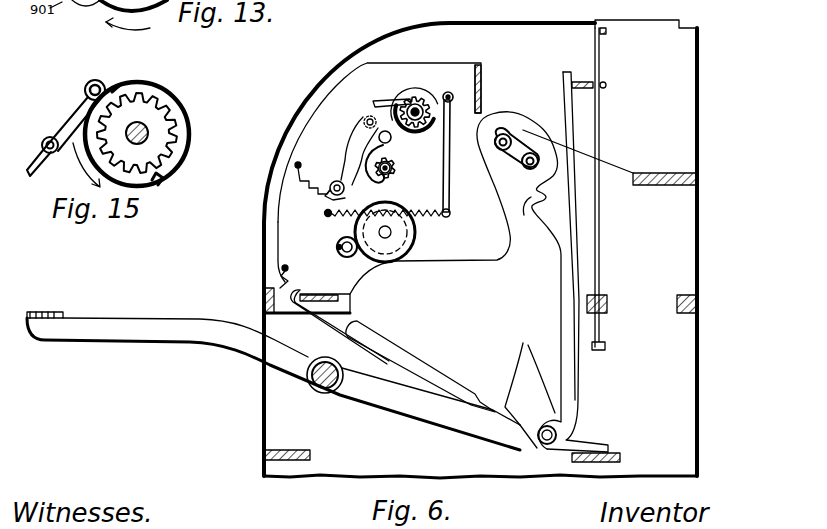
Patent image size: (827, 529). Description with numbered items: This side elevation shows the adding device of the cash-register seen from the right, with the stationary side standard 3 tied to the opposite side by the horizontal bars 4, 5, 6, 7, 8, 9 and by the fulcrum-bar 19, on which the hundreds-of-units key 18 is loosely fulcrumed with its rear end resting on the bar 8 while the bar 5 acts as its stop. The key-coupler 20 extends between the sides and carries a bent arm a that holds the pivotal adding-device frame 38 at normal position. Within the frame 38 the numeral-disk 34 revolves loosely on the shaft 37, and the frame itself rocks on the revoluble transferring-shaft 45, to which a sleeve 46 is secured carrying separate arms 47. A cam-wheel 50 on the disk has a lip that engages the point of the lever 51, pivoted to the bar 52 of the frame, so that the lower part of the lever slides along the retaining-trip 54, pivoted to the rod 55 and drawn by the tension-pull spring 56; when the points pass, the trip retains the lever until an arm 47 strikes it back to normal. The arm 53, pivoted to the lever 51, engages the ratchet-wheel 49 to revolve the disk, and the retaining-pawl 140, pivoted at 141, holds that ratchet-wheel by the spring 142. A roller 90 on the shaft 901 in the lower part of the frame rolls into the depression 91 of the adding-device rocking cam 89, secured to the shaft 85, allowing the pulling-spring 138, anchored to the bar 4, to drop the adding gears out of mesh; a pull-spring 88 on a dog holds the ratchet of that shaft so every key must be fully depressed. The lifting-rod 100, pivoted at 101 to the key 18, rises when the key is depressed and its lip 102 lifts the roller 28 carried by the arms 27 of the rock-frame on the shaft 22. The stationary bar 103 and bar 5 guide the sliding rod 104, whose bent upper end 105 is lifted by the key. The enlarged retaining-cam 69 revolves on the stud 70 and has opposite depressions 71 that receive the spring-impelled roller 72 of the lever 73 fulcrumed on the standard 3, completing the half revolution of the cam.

In FIG. 6, the side standard 3 is at (305, 102).
In FIG. 6, the horizontal bar 4 is at (262, 303).
In FIG. 6, the horizontal bar 5 is at (608, 300).
In FIG. 6, the horizontal bar 6 is at (697, 300).
In FIG. 6, the horizontal bar 7 is at (263, 452).
In FIG. 6, the horizontal bar 8 is at (621, 455).
In FIG. 6, the horizontal bar 9 is at (672, 174).
In FIG. 6, the hundreds-of-units key 18 is at (98, 325).
In FIG. 6, the horizontal bar 19 is at (324, 388).
In FIG. 6, the key-coupler 20 is at (425, 366).
In FIG. 6, the rock-frame shaft 22 is at (503, 134).
In FIG. 6, the arm 27 is at (517, 147).
In FIG. 6, the roller 28 is at (535, 153).
In FIG. 6, the numeral-disk 34 is at (417, 95).
In FIG. 6, the shaft 37 is at (429, 100).
In FIG. 6, the adding-device frame 38 is at (372, 78).
In FIG. 6, the transferring-shaft 45 is at (383, 176).
In FIG. 6, the sleeve 46 is at (392, 181).
In FIG. 6, the arm 47 is at (396, 166).
In FIG. 6, the ratchet-wheel 49 is at (428, 106).
In FIG. 6, the cam-wheel 50 is at (411, 97).
In FIG. 6, the lever 51 is at (366, 144).
In FIG. 6, the bar 52 is at (363, 122).
In FIG. 6, the arm 53 is at (392, 100).
In FIG. 6, the retaining-trip 54 is at (337, 178).
In FIG. 6, the rod 55 is at (343, 201).
In FIG. 6, the tension-pull spring 56 is at (300, 181).
In FIG. 15, the retaining-cam 69 is at (186, 158).
In FIG. 15, the stud 70 is at (148, 133).
In FIG. 15, the depression 71 is at (121, 88).
In FIG. 15, the roller 72 is at (96, 80).
In FIG. 15, the lever 73 is at (70, 112).
In FIG. 6, the shaft 85 is at (415, 232).
In FIG. 15, the pull-spring 88 is at (167, 123).
In FIG. 6, the adding-device rocking cam 89 is at (410, 244).
In FIG. 6, the roller 90 is at (343, 256).
In FIG. 6, the depression 91 is at (339, 240).
In FIG. 6, the lifting-rod 100 is at (567, 72).
In FIG. 6, the pivot 101 is at (541, 443).
In FIG. 6, the lip 102 is at (527, 212).
In FIG. 6, the stationary bar 103 is at (607, 85).
In FIG. 6, the sliding rod 104 is at (600, 125).
In FIG. 6, the bent upper end 105 is at (645, 15).
In FIG. 6, the pulling-spring 138 is at (279, 284).
In FIG. 6, the retaining-pawl 140 is at (450, 180).
In FIG. 6, the pivot 141 is at (460, 104).
In FIG. 6, the spring 142 is at (324, 213).
In FIG. 6, the shaft 901 is at (336, 247).
In FIG. 6, the bent arm a is at (312, 322).